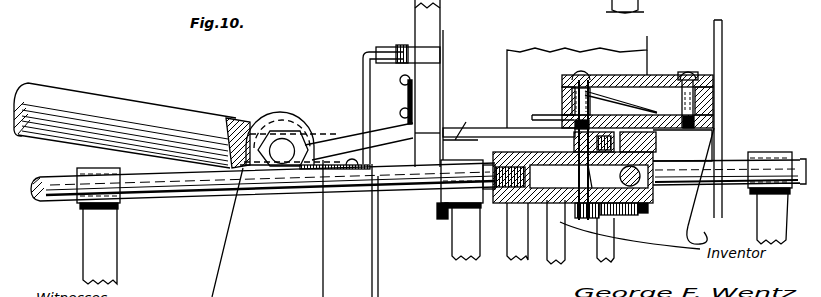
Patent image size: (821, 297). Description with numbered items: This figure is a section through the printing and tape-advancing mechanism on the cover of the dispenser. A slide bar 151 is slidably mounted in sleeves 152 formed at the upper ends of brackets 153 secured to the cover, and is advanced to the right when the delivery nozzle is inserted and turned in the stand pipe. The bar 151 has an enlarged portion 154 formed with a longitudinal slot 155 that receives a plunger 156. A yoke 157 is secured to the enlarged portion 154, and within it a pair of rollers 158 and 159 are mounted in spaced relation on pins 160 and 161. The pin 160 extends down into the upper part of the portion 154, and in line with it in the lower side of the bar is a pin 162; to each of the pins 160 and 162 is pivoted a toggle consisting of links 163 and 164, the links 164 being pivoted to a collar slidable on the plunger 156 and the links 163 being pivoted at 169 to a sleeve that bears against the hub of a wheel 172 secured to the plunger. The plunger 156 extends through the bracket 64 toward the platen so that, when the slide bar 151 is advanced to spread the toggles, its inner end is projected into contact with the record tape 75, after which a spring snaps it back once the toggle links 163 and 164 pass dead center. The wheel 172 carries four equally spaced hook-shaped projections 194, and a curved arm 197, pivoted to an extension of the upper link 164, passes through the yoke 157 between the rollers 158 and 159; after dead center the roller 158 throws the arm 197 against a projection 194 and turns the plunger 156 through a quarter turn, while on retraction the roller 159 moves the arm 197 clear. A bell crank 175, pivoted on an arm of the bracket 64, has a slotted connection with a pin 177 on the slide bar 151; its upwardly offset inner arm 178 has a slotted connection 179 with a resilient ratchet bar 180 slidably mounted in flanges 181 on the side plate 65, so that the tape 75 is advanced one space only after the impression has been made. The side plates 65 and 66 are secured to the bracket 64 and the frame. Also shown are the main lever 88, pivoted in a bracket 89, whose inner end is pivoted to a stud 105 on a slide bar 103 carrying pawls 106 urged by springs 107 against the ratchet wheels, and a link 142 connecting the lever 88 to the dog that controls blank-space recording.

The bracket 64 is at (466, 122).
The side plate 65 is at (443, 105).
The side plate 66 is at (722, 36).
The record tape 75 is at (584, 56).
The main lever 88 is at (91, 80).
The bracket 89 is at (236, 245).
The slide bar 103 is at (422, 134).
The stud 105 is at (430, 196).
The pawls 106 is at (416, 14).
The springs 107 is at (404, 108).
The link 142 is at (373, 265).
The slide bar 151 is at (160, 190).
The sleeves 152 is at (81, 172).
The brackets 153 is at (90, 246).
The enlarged portion 154 is at (492, 266).
The longitudinal slot 155 is at (548, 192).
The plunger 156 is at (618, 176).
The yoke 157 is at (654, 77).
The roller 158 is at (572, 97).
The roller 159 is at (706, 94).
The pin 160 is at (576, 77).
The pin 161 is at (698, 76).
The pin 162 is at (600, 206).
The toggle links 163 is at (572, 145).
The toggle links 164 is at (520, 135).
The pivotal connection 169 is at (640, 210).
The wheel 172 is at (681, 197).
The bell crank 175 is at (328, 148).
The pin 177 is at (293, 126).
The upwardly offset inner arm 178 is at (363, 53).
The slotted connection 179 is at (398, 49).
The ratchet bar 180 is at (400, 80).
The flanges 181 is at (441, 54).
The hook-shaped projections 194 is at (701, 236).
The curved arm 197 is at (545, 104).